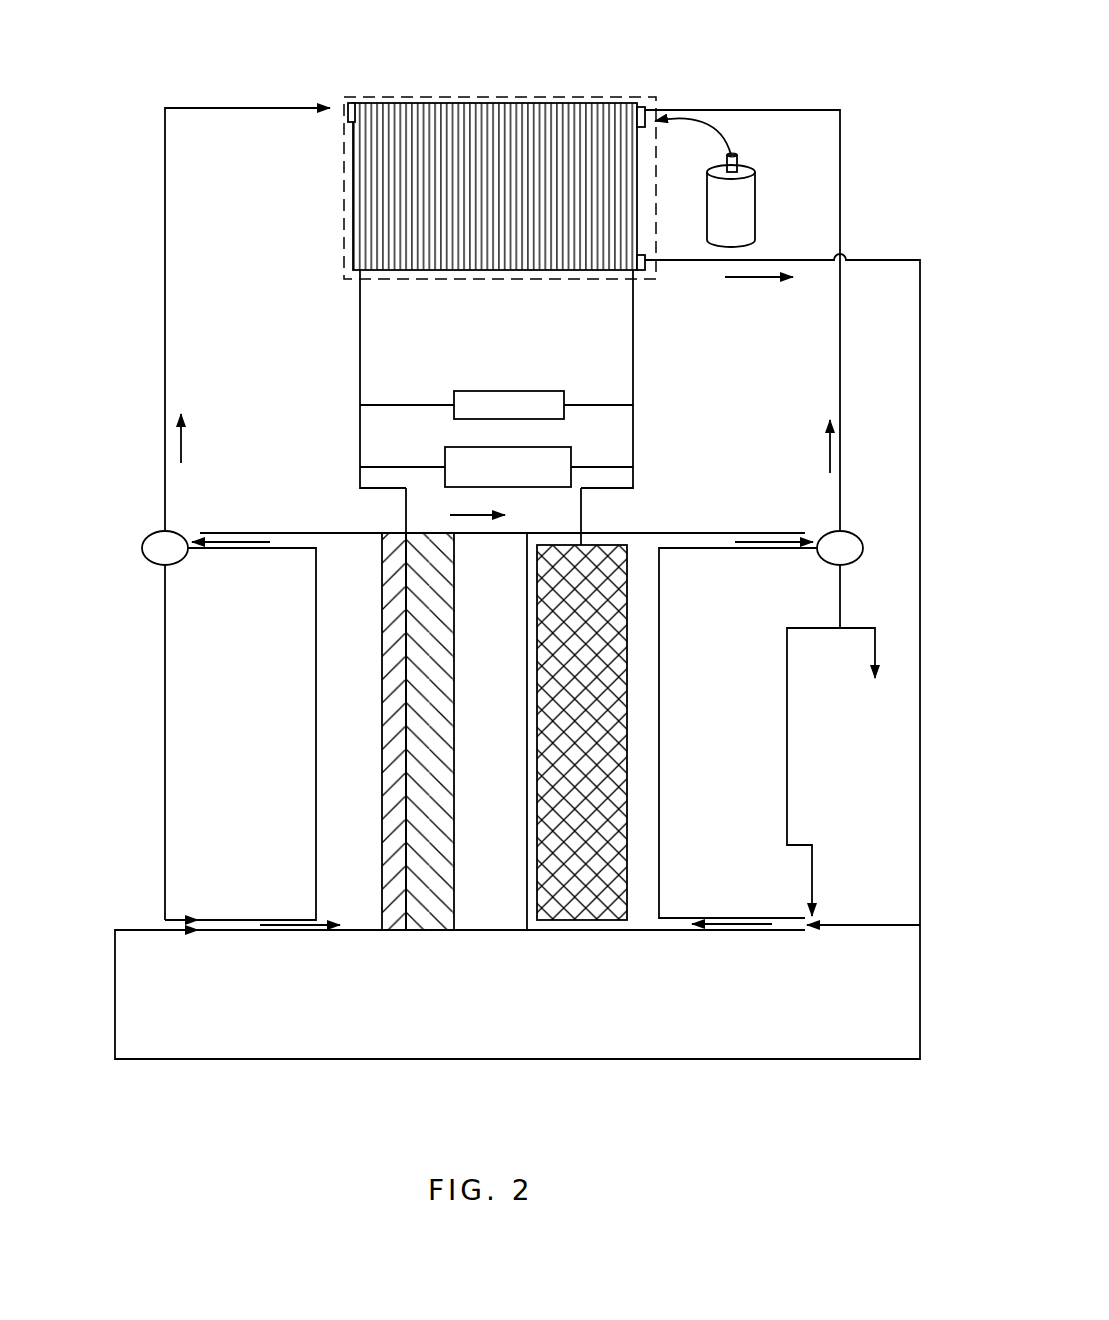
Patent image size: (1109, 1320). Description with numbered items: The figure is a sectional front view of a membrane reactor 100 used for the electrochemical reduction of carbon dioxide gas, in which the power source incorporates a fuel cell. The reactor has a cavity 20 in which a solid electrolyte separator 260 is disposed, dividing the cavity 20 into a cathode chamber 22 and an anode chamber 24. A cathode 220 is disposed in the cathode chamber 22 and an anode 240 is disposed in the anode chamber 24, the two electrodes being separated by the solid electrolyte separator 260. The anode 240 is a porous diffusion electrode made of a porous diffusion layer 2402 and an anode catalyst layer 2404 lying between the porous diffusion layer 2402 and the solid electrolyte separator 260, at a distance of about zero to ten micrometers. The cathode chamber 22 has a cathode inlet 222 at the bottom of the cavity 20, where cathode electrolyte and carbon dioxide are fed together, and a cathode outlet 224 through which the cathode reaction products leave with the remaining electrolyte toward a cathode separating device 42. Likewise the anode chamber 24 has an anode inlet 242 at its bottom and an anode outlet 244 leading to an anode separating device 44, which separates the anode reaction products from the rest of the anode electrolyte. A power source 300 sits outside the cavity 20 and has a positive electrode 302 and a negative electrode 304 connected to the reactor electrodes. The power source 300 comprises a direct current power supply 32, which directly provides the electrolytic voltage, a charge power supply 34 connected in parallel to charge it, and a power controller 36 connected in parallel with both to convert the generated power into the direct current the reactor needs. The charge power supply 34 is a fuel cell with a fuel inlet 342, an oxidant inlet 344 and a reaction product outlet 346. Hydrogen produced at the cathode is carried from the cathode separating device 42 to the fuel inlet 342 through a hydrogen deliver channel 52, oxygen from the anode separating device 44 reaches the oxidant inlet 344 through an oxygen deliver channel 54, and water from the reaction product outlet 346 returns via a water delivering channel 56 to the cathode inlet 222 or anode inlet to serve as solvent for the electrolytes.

The membrane reactor 100 is at (494, 44).
The cavity 20 is at (316, 795).
The cathode chamber 22 is at (642, 653).
The anode chamber 24 is at (348, 722).
The cathode 220 is at (630, 778).
The cathode inlet 222 is at (780, 925).
The cathode outlet 224 is at (727, 540).
The anode 240 is at (402, 787).
The porous diffusion layer 2402 is at (392, 908).
The anode catalyst layer 2404 is at (433, 905).
The anode inlet 242 is at (240, 918).
The anode outlet 244 is at (230, 543).
The solid electrolyte separator 260 is at (499, 917).
The power source 300 is at (262, 243).
The positive electrode 302 is at (406, 514).
The negative electrode 304 is at (582, 515).
The direct current power supply 32 is at (465, 446).
The charge power supply 34 is at (343, 257).
The power controller 36 is at (472, 390).
The fuel inlet 342 is at (645, 110).
The oxidant inlet 344 is at (352, 105).
The reaction product outlet 346 is at (642, 272).
The cathode separating device 42 is at (840, 548).
The anode separating device 44 is at (165, 548).
The hydrogen deliver channel 52 is at (840, 378).
The oxygen deliver channel 54 is at (165, 350).
The water delivering channel 56 is at (920, 722).